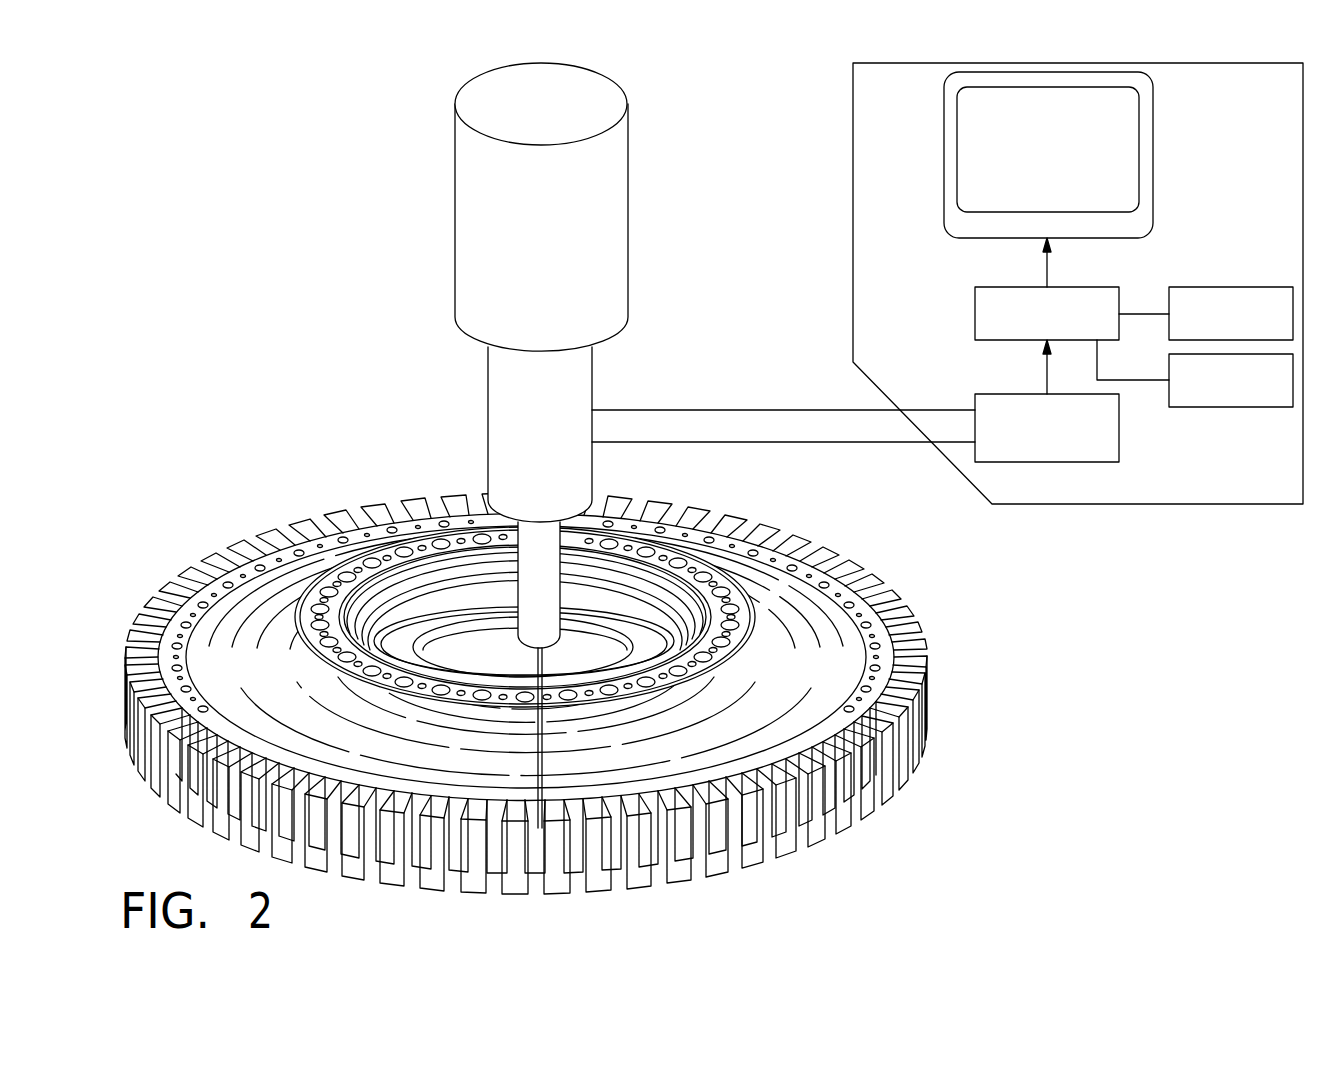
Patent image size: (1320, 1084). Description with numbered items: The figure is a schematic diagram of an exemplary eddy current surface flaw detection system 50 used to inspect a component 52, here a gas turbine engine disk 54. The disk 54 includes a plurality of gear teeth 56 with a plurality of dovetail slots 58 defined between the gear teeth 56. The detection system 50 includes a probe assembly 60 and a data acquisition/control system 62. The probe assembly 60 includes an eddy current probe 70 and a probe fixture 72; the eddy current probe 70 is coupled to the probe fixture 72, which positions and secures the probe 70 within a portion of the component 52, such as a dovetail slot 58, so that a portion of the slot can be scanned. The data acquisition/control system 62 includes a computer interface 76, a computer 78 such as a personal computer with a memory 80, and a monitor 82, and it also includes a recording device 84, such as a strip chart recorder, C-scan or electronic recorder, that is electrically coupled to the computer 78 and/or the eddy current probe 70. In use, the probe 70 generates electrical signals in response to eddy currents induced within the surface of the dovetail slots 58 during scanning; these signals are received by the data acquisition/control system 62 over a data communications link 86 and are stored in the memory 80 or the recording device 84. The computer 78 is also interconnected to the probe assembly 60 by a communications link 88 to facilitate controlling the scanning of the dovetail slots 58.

The eddy current surface flaw detection system 50 is at (712, 498).
The component 52 is at (554, 672).
The gas turbine engine disk 54 is at (526, 657).
The gear teeth 56 is at (554, 693).
The dovetail slots 58 is at (569, 727).
The probe assembly 60 is at (558, 498).
The data acquisition/control system 62 is at (947, 304).
The eddy current probe 70 is at (493, 434).
The probe fixture 72 is at (500, 207).
The computer interface 76 is at (1024, 401).
The computer 78 is at (1007, 289).
The memory 80 is at (1206, 291).
The monitor 82 is at (1008, 155).
The recording device 84 is at (1195, 395).
The data link 86 is at (783, 467).
The communications link 88 is at (783, 386).